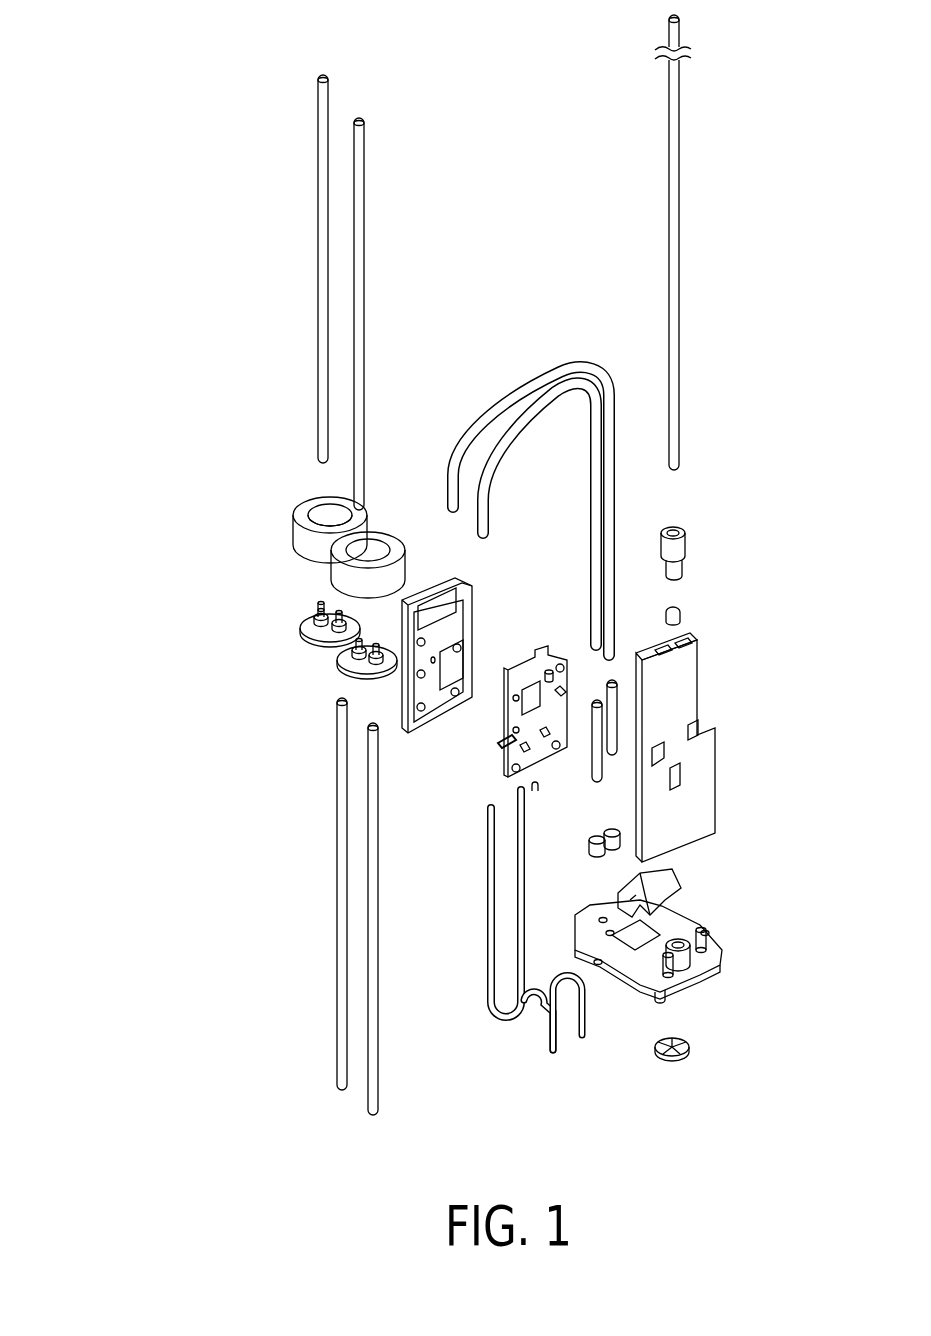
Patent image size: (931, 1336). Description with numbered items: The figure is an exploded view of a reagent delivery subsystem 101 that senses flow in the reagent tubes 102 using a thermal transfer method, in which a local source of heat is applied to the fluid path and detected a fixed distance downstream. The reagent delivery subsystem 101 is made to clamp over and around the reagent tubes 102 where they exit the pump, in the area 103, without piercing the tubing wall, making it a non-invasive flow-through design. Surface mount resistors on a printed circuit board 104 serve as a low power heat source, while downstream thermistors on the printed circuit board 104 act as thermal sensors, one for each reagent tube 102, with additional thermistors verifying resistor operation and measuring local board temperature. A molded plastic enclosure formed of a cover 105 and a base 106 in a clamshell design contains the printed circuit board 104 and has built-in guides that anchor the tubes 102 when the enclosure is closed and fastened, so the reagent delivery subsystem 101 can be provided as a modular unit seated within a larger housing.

The reagent delivery subsystem 101 is at (226, 189).
The reagent tubes 102 is at (556, 1050).
The area where the reagent tubes exit the pump 103 is at (475, 806).
The printed circuit board 104 is at (500, 746).
The cover 105 is at (700, 788).
The base 106 is at (420, 691).